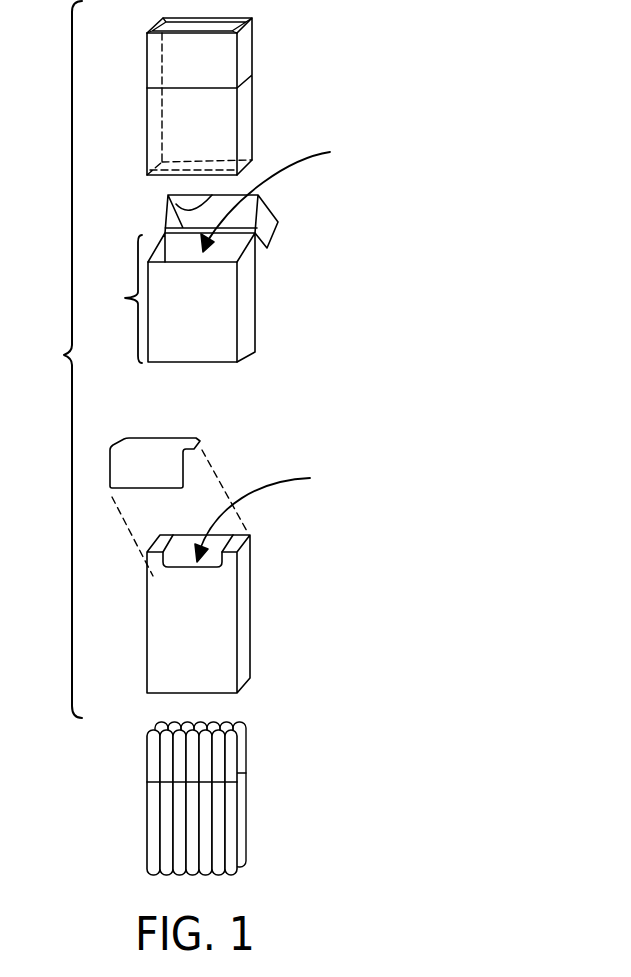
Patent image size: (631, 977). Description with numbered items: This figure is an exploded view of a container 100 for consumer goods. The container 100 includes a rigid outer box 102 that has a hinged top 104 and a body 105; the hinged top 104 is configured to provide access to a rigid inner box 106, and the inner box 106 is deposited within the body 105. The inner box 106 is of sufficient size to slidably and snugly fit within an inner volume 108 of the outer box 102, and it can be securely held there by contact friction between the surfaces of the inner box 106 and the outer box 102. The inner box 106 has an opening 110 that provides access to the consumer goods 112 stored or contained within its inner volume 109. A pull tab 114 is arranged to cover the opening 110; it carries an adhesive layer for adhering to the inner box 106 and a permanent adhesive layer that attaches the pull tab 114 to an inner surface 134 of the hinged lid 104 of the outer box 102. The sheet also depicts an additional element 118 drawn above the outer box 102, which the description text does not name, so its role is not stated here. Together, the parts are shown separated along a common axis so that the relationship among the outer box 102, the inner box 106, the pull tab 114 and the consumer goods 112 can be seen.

The container 100 is at (50, 359).
The outer sleeve 118 is at (260, 77).
The rigid outer box 102 is at (262, 297).
The hinged top 104 is at (262, 223).
The inner volume 108 is at (284, 195).
The inner surface 134 is at (176, 205).
The body 105 is at (114, 299).
The pull tab 114 is at (160, 450).
The inner volume 109 is at (271, 514).
The opening 110 is at (224, 565).
The rigid inner box 106 is at (260, 613).
The consumer goods 112 is at (252, 793).